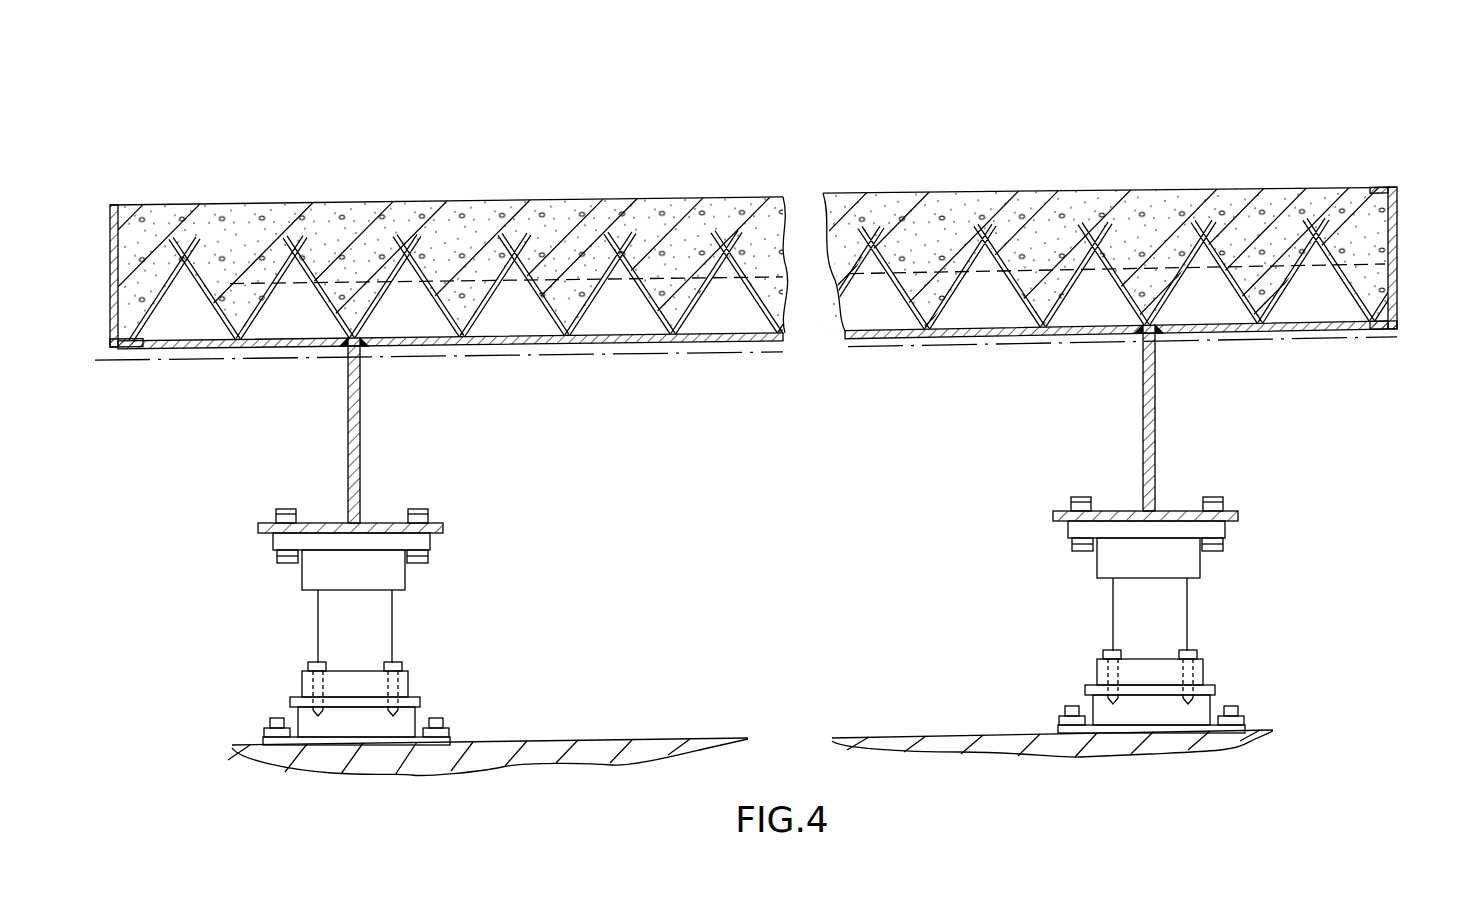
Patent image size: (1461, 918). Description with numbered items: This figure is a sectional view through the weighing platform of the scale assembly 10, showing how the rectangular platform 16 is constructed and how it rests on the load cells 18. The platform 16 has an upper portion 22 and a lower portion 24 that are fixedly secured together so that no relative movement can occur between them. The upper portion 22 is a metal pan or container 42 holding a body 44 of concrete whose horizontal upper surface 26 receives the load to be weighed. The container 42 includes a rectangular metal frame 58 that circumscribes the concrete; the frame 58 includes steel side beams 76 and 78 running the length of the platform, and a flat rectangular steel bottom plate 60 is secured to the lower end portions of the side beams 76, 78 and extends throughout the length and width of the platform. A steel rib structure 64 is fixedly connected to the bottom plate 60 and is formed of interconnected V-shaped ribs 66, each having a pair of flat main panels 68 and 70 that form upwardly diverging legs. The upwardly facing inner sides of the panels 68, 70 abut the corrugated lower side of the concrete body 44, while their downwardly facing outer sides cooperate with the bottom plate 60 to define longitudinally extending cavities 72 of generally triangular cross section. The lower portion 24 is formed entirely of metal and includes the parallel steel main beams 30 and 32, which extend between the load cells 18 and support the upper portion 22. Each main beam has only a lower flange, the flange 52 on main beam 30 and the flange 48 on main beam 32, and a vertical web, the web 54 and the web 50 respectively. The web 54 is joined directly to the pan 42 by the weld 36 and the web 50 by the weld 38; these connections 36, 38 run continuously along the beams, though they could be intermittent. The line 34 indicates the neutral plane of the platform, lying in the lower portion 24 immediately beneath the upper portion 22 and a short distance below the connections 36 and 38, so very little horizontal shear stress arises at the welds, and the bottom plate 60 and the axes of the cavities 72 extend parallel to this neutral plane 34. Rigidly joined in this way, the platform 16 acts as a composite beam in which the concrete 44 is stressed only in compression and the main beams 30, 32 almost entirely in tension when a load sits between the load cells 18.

The scale assembly 10 is at (979, 134).
The rectangular platform 16 is at (575, 196).
The load cells 18 is at (1147, 616).
The upper portion 22 is at (1341, 189).
The lower portion 24 is at (1159, 423).
The horizontal upper surface 26 is at (889, 196).
The main beam 30 is at (347, 435).
The main beam 32 is at (1141, 447).
The neutral plane 34 is at (577, 358).
The weld 36 is at (348, 348).
The weld 38 is at (1140, 336).
The metal pan 42 is at (1397, 238).
The body of concrete 44 is at (1149, 216).
The lower flange 48 is at (1172, 510).
The vertical web 50 is at (1153, 400).
The lower flange 52 is at (378, 522).
The vertical web 54 is at (362, 398).
The rectangular metal frame 58 is at (1398, 267).
The bottom plate 60 is at (744, 340).
The steel rib structure 64 is at (638, 263).
The V-shaped ribs 66 is at (480, 320).
The main panel 68 is at (1080, 277).
The main panel 70 is at (1118, 287).
The cavities 72 is at (1330, 323).
The side beam 76 is at (112, 340).
The side beam 78 is at (1398, 298).